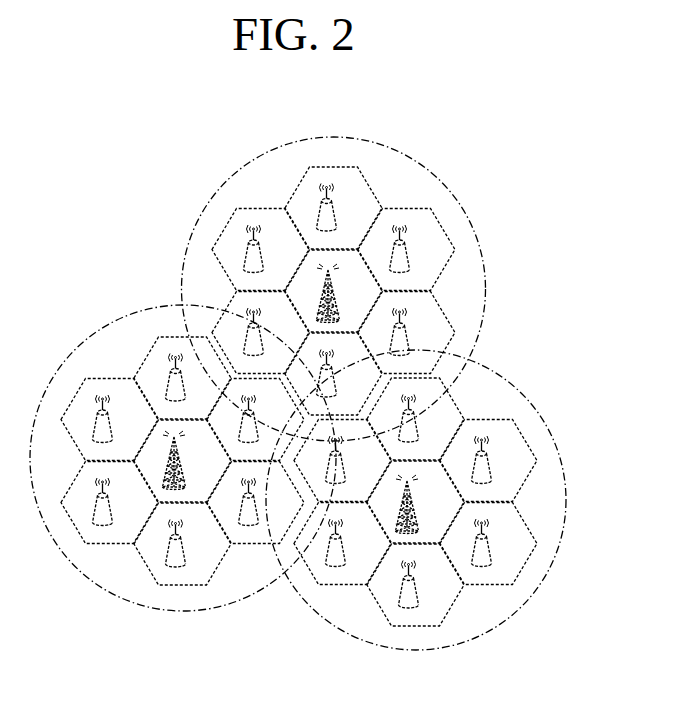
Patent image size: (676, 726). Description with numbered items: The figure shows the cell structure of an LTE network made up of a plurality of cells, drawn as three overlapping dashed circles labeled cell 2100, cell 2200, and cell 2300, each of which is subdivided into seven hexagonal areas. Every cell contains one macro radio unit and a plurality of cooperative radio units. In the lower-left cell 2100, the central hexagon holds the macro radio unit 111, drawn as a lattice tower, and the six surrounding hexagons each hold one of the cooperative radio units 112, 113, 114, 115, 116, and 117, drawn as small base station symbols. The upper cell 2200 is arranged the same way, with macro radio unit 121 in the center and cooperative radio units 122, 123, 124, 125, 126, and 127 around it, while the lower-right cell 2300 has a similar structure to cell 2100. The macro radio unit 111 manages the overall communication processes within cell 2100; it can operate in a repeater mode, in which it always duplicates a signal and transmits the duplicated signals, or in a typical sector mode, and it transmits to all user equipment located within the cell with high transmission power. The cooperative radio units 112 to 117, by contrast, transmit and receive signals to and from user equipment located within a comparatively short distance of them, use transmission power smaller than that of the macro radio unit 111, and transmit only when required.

The cell 2100 is at (143, 308).
The cell 2200 is at (415, 160).
The cell 2300 is at (333, 630).
The macro radio unit 111 is at (185, 458).
The cooperative radio unit 112 is at (108, 498).
The cooperative radio unit 113 is at (180, 538).
The cooperative radio unit 114 is at (254, 498).
The cooperative radio unit 115 is at (254, 416).
The cooperative radio unit 116 is at (180, 375).
The cooperative radio unit 117 is at (108, 416).
The macro radio unit 121 is at (338, 288).
The cooperative radio unit 122 is at (258, 330).
The cooperative radio unit 123 is at (332, 371).
The cooperative radio unit 124 is at (404, 330).
The cooperative radio unit 125 is at (404, 247).
The cooperative radio unit 126 is at (332, 206).
The cooperative radio unit 127 is at (258, 247).